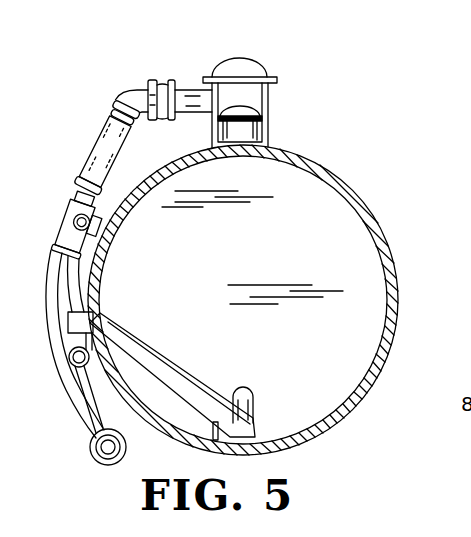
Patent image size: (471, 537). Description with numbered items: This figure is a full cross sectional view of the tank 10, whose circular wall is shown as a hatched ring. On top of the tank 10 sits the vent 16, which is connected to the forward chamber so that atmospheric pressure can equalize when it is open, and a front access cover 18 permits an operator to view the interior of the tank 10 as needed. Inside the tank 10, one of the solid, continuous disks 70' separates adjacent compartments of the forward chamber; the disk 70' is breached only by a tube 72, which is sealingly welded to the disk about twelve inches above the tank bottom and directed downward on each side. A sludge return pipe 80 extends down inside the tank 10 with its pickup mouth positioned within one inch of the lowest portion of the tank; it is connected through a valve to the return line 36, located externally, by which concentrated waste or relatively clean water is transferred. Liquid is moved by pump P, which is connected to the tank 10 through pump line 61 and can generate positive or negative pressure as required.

The tank 10 is at (357, 193).
The vent 16 is at (262, 64).
The front access cover 18 is at (257, 111).
The disk 70' is at (252, 247).
The sludge return pipe 80 is at (147, 343).
The tube 72 is at (250, 391).
The return line 36 is at (69, 361).
The pump line 61 is at (91, 448).